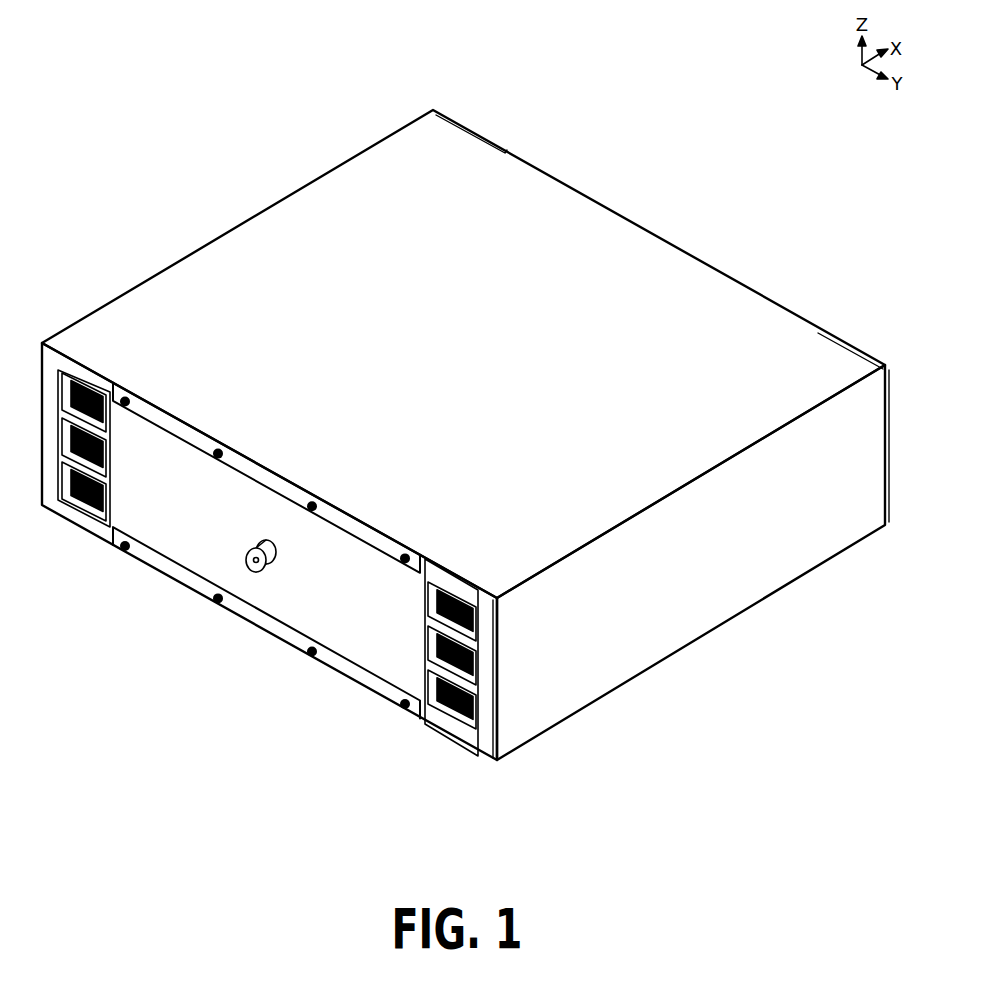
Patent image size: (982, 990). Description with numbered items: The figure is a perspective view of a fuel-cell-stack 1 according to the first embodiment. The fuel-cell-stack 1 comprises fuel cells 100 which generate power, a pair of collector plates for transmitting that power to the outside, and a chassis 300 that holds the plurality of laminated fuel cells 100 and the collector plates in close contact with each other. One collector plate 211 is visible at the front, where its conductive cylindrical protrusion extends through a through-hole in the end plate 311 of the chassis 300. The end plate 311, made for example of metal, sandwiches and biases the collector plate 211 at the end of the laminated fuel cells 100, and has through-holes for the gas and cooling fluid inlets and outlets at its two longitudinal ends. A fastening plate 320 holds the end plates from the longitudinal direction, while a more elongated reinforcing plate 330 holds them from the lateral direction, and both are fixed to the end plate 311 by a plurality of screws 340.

The fuel-cell-stack 1 is at (455, 427).
The fuel cells 100 is at (85, 507).
The collector plate 211 is at (250, 572).
The chassis 300 is at (780, 646).
The end plate 311 is at (170, 543).
The fastening plate 320 is at (765, 317).
The reinforcing plate 330 is at (677, 637).
The screws 340 is at (398, 708).